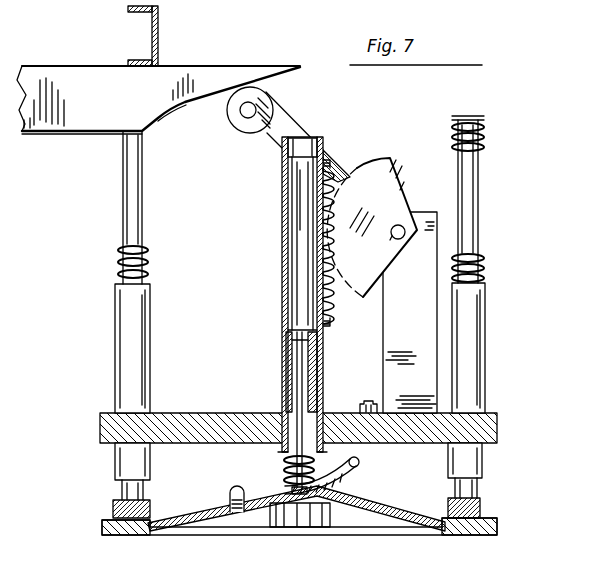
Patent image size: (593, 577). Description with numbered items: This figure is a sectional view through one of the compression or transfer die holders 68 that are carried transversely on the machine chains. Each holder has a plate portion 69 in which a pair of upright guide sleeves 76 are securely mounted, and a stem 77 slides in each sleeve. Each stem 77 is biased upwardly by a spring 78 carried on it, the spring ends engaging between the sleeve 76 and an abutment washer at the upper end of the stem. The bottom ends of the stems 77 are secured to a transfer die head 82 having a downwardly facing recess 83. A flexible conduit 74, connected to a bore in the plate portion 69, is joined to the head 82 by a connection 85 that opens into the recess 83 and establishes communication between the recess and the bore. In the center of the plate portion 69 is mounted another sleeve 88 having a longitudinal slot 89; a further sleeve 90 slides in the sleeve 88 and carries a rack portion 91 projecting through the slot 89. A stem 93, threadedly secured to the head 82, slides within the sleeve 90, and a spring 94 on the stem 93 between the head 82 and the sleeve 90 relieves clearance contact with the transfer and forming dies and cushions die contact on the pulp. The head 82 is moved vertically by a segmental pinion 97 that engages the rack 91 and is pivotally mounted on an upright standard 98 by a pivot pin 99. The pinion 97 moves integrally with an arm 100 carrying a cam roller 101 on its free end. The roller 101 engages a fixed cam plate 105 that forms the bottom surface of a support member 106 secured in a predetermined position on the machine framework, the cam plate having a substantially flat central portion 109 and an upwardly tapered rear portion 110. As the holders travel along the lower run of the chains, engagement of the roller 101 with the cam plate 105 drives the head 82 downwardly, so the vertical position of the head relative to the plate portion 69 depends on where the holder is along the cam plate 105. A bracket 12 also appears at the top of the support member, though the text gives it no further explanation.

The bracket 12 is at (159, 39).
The transfer die holder 68 is at (514, 494).
The plate portion 69 is at (498, 427).
The flexible conduit 74 is at (352, 468).
The guide sleeve 76 is at (116, 328).
The stem 77 is at (125, 190).
The spring 78 is at (120, 258).
The transfer die head 82 is at (186, 505).
The recess 83 is at (212, 527).
The connection 85 is at (238, 513).
The sleeve 88 is at (283, 282).
The longitudinal slot 89 is at (336, 160).
The sleeve 90 is at (297, 250).
The rack portion 91 is at (333, 306).
The stem 93 is at (296, 368).
The spring 94 is at (284, 470).
The segmental pinion 97 is at (394, 165).
The upright standard 98 is at (428, 212).
The pivot pin 99 is at (403, 240).
The arm 100 is at (290, 120).
The cam roller 101 is at (230, 119).
The cam plate 105 is at (82, 126).
The support member 106 is at (46, 67).
The flat central portion 109 is at (34, 133).
The tapered rear portion 110 is at (190, 104).